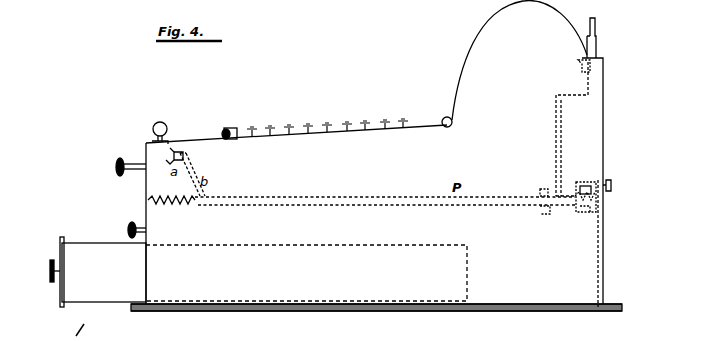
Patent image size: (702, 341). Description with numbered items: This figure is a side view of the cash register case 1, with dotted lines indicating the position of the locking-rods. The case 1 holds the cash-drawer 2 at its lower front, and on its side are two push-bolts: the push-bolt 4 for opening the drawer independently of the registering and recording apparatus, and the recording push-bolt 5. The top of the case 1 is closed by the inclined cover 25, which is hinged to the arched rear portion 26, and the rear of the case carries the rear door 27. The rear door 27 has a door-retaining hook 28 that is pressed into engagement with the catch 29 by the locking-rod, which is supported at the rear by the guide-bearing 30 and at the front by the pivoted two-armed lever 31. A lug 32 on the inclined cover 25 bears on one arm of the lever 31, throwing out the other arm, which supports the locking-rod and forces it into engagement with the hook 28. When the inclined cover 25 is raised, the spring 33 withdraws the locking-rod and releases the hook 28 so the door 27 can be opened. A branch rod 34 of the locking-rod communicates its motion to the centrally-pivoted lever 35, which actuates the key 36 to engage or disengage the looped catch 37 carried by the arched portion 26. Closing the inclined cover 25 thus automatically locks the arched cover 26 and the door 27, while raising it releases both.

The case 1 is at (603, 112).
The cash-drawer 2 is at (98, 272).
The push-bolt 4 is at (127, 226).
The recording push-bolt 5 is at (120, 159).
The inclined cover 25 is at (215, 140).
The arched rear portion 26 is at (514, 64).
The rear door 27 is at (598, 232).
The door-retaining hook 28 is at (598, 183).
The catch 29 is at (588, 211).
The guide-bearing 30 is at (548, 212).
The pivoted two-armed lever 31 is at (190, 158).
The lug 32 is at (176, 146).
The spring 33 is at (361, 208).
The branch rod 34 is at (561, 140).
The centrally-pivoted lever 35 is at (587, 82).
The key 36 is at (597, 66).
The looped catch 37 is at (580, 66).